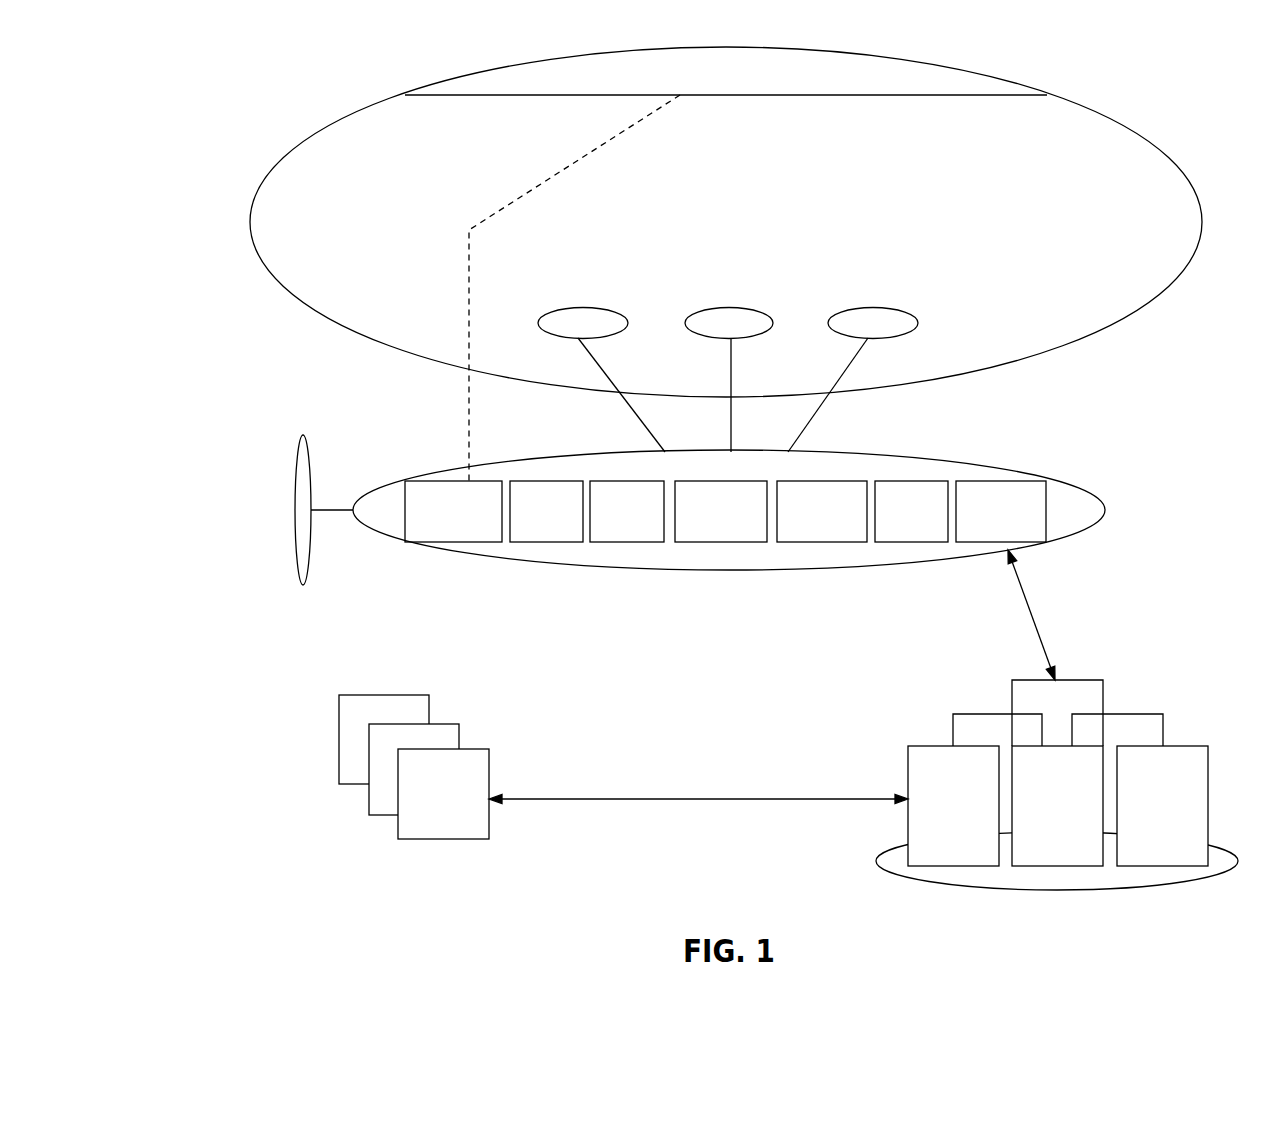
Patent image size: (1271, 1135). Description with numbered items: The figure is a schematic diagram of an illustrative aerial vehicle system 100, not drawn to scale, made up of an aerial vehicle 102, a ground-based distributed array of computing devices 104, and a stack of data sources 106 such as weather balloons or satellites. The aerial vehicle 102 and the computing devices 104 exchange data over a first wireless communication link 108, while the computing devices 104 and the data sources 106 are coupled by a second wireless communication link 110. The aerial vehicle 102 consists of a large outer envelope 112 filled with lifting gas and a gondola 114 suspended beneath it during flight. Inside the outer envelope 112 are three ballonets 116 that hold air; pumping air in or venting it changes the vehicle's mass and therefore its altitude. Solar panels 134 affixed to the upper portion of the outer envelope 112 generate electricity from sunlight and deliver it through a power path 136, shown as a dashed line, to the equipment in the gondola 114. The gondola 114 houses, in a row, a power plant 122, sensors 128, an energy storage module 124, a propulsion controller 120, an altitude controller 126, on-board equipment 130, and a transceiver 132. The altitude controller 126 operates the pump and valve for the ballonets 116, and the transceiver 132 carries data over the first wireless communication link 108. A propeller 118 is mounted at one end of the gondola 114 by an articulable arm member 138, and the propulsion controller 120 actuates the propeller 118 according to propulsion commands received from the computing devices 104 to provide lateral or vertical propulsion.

The aerial vehicle system 100 is at (149, 48).
The aerial vehicle 102 is at (1168, 382).
The computing devices 104 is at (1057, 785).
The data sources 106 is at (414, 767).
The first wireless communication link 108 is at (1027, 600).
The second wireless communication link 110 is at (688, 799).
The outer envelope 112 is at (1060, 345).
The gondola 114 is at (443, 470).
The ballonets 116 is at (728, 380).
The propeller 118 is at (297, 465).
The propulsion controller 120 is at (721, 511).
The power plant 122 is at (453, 511).
The energy storage module 124 is at (627, 511).
The altitude controller 126 is at (822, 511).
The sensors 128 is at (546, 511).
The on-board equipment 130 is at (911, 511).
The transceiver 132 is at (1001, 511).
The solar panels 134 is at (726, 79).
The power path 136 is at (558, 174).
The articulable arm member 138 is at (333, 510).